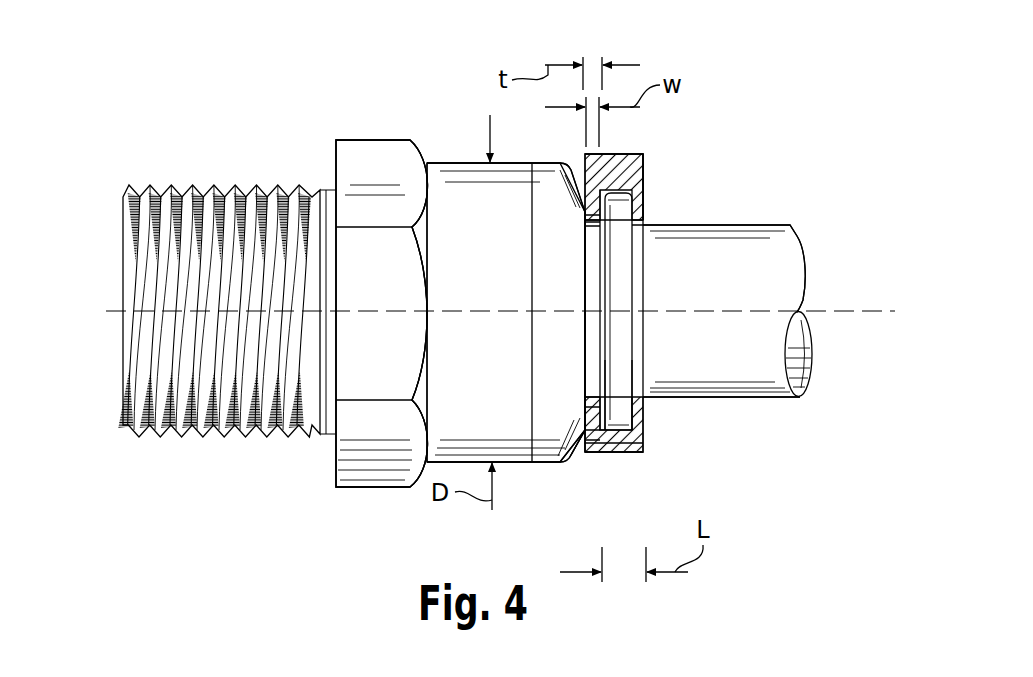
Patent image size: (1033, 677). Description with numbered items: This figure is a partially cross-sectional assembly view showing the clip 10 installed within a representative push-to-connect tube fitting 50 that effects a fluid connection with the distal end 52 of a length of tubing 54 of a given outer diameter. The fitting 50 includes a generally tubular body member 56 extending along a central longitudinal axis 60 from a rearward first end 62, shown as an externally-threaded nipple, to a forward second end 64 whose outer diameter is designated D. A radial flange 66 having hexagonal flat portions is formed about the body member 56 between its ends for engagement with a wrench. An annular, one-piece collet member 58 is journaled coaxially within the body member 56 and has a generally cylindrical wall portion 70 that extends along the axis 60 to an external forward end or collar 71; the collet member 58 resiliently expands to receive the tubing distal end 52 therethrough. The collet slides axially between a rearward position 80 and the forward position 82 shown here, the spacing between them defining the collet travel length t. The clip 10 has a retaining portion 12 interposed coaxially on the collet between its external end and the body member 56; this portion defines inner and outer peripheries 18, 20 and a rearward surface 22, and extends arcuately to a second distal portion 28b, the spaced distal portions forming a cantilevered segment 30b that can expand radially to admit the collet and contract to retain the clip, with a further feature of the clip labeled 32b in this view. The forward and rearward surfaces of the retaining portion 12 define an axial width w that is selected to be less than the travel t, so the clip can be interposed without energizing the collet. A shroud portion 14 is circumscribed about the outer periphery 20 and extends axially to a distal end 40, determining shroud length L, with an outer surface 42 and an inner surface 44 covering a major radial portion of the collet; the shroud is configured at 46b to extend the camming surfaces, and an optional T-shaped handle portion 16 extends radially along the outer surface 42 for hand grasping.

The clip 10 is at (775, 102).
The retaining portion 12 is at (585, 212).
The shroud portion 14 is at (648, 178).
The handle portion 16 is at (640, 158).
The inner periphery 18 is at (585, 382).
The outer periphery 20 is at (584, 455).
The rearward surface 22 is at (582, 410).
The second distal portion 28b is at (648, 452).
The cantilevered segment 30b is at (634, 440).
The body camming surface 32b is at (570, 445).
The distal end 40 is at (645, 216).
The outer surface 42 is at (637, 182).
The inner surface 44 is at (645, 200).
The camming surface extension 46b is at (618, 452).
The push-to-connect tube fitting 50 is at (397, 112).
The distal end 52 is at (640, 362).
The tubing 54 is at (802, 240).
The body member 56 is at (438, 163).
The collet member 58 is at (632, 300).
The central longitudinal axis 60 is at (843, 311).
The rearward first end 62 is at (123, 185).
The forward second end 64 is at (590, 284).
The radial flange 66 is at (343, 140).
The wall portion 70 is at (590, 246).
The collar 71 is at (640, 426).
The rearward position 80 is at (583, 58).
The forward position 82 is at (602, 58).